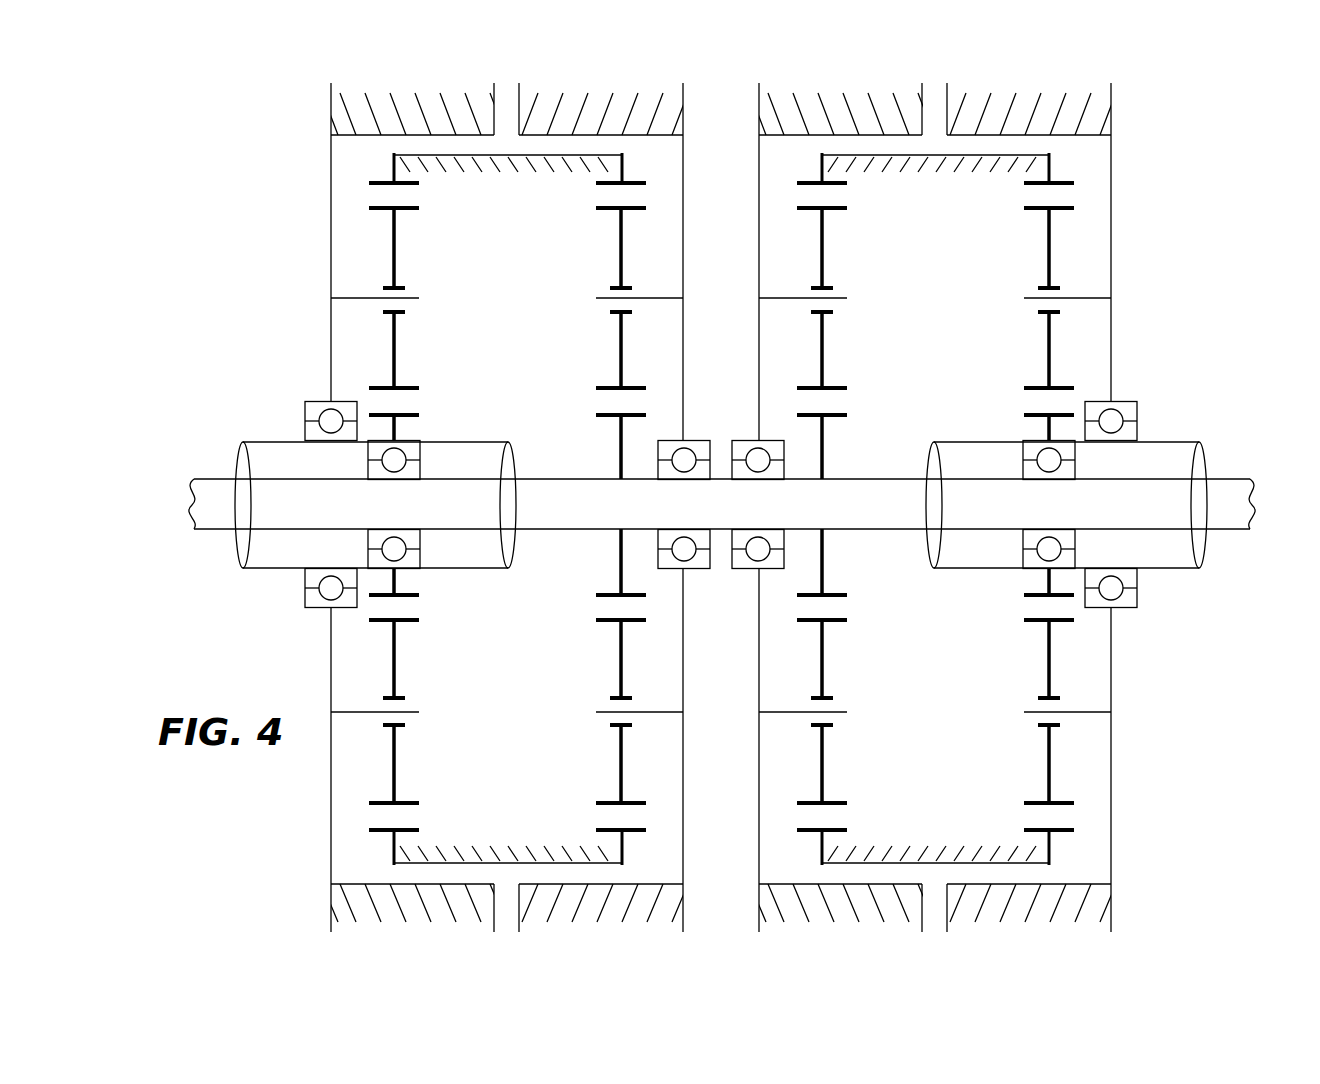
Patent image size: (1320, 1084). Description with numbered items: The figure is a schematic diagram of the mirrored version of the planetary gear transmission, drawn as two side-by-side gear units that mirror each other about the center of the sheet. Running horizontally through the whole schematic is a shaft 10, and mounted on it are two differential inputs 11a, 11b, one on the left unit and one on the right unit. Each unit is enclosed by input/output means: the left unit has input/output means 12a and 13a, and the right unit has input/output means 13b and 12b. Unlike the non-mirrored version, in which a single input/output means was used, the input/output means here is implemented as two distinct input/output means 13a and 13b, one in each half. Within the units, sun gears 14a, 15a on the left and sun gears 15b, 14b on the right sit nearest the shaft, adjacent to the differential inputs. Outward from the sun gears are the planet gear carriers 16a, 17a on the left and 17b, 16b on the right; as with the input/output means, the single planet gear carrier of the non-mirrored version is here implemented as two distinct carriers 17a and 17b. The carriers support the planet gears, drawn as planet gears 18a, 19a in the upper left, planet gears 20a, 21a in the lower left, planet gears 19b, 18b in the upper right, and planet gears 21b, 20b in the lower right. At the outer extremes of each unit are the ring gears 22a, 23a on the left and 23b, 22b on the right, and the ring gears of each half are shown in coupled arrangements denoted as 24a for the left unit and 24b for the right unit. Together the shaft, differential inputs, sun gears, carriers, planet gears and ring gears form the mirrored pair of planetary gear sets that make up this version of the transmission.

The shaft 10 is at (213, 493).
The differential input 11a is at (262, 453).
The differential input 11b is at (1180, 457).
The input/output means 12a is at (420, 107).
The input/output means 12b is at (1032, 108).
The input/output means 13a is at (604, 108).
The input/output means 13b is at (846, 107).
The sun gear 14a is at (397, 433).
The sun gear 14b is at (1046, 433).
The sun gear 15a is at (617, 433).
The sun gear 15b is at (825, 433).
The planet gear carrier 16a is at (400, 300).
The planet gear carrier 16b is at (1043, 300).
The planet gear carrier 17a is at (615, 300).
The planet gear carrier 17b is at (828, 300).
The planet gear 18a is at (397, 285).
The planet gear 18b is at (1046, 285).
The planet gear 19a is at (618, 285).
The planet gear 19b is at (825, 285).
The planet gear 20a is at (398, 740).
The planet gear 20b is at (1045, 740).
The planet gear 21a is at (617, 740).
The planet gear 21b is at (826, 740).
The ring gear 22a is at (393, 170).
The ring gear 22b is at (1049, 170).
The ring gear 23a is at (622, 168).
The ring gear 23b is at (822, 170).
The coupled arrangement 24a is at (516, 168).
The coupled arrangement 24b is at (946, 168).